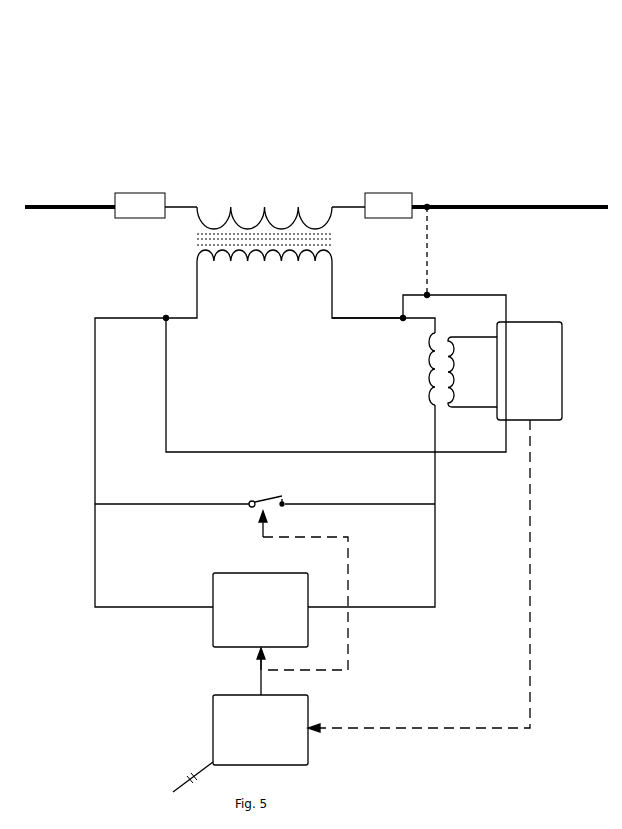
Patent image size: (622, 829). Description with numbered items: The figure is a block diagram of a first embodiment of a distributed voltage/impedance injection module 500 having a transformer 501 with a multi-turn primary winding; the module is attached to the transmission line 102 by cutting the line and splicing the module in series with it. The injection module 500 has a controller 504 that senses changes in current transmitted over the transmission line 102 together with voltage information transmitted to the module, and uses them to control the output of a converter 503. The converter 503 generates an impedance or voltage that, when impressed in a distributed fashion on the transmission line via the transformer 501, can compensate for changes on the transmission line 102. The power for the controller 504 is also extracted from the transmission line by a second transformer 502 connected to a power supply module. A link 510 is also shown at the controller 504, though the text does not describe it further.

The injection module 500 is at (313, 98).
The transmission line 102 is at (36, 201).
The transformer 501 is at (264, 208).
The second transformer 502 is at (453, 295).
The converter 503 is at (267, 572).
The controller 504 is at (212, 728).
The communication link 510 is at (194, 779).